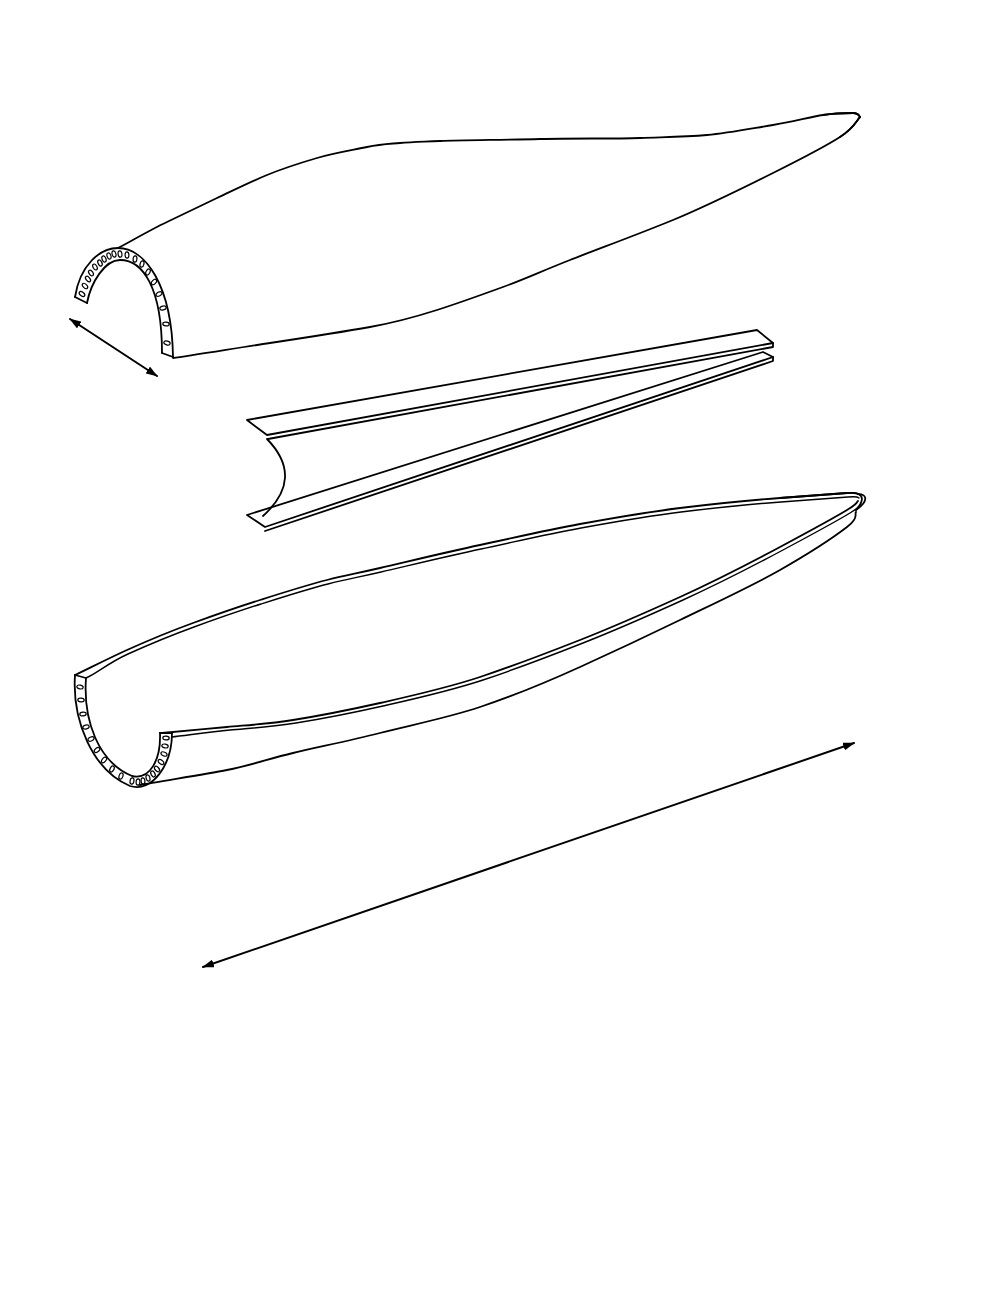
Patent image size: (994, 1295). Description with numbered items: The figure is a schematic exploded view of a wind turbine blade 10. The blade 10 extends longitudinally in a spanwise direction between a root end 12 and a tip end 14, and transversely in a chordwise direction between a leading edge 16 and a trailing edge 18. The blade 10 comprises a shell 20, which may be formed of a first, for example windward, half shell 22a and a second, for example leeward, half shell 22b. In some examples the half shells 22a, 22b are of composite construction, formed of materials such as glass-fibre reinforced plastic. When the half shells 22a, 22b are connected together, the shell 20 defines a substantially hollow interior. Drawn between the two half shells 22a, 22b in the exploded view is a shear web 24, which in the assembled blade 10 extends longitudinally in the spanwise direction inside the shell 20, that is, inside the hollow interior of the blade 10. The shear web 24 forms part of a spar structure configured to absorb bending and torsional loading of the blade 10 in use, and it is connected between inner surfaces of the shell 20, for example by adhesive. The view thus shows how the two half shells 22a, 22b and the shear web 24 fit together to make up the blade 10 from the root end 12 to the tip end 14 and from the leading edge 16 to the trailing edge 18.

The wind turbine blade 10 is at (150, 81).
The root end 12 is at (95, 643).
The tip end 14 is at (877, 157).
The leading edge 16 is at (628, 240).
The trailing edge 18 is at (105, 280).
The shell 20 is at (148, 190).
The first half shell 22a is at (558, 130).
The second half shell 22b is at (316, 764).
The shear web 24 is at (540, 464).